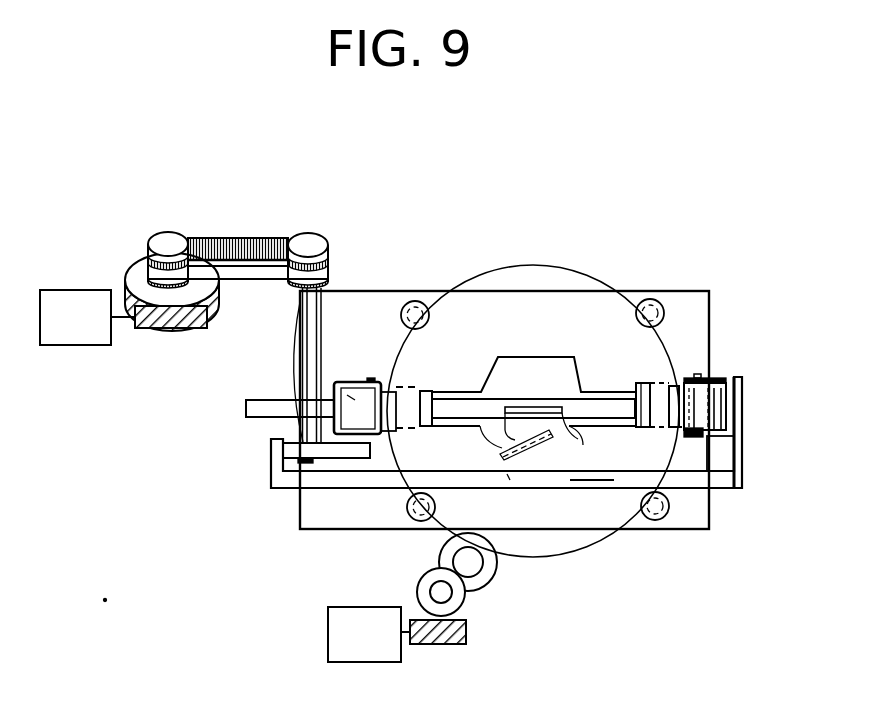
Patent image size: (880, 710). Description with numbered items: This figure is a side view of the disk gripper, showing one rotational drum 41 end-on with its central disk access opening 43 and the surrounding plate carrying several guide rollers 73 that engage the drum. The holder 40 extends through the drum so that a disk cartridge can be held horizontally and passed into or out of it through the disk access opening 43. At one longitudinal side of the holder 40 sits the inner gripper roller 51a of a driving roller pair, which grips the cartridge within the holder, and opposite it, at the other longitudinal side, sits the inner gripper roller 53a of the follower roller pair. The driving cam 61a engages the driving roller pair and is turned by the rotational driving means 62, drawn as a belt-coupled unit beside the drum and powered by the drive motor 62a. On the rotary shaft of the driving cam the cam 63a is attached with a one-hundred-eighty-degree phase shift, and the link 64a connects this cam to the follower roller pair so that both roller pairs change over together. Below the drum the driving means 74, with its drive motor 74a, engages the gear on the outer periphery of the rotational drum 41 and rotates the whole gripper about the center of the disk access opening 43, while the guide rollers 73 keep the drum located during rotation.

The holder 40 is at (660, 384).
The rotational drum 41 is at (594, 273).
The disk access opening 43 is at (525, 355).
The inner gripper roller 51a is at (333, 382).
The inner gripper roller 53a is at (720, 379).
The driving cam 61a is at (243, 407).
The rotational driving means 62 is at (118, 254).
The drive motor 62a is at (78, 344).
The cam 63a is at (316, 459).
The link 64a is at (340, 488).
The guide roller 73 is at (398, 317).
The driving means 74 is at (480, 593).
The drive motor 74a is at (332, 642).